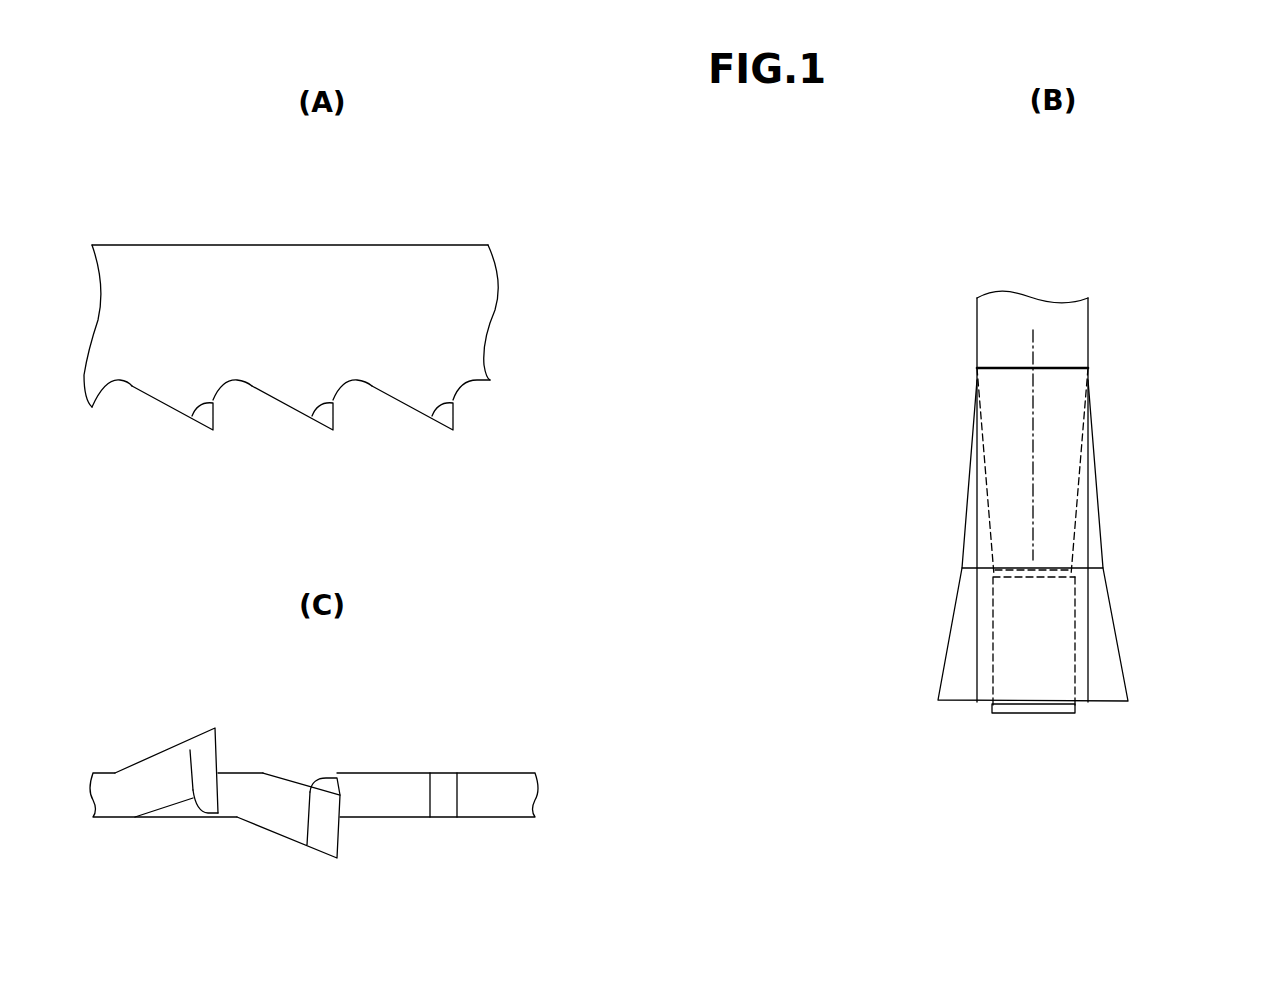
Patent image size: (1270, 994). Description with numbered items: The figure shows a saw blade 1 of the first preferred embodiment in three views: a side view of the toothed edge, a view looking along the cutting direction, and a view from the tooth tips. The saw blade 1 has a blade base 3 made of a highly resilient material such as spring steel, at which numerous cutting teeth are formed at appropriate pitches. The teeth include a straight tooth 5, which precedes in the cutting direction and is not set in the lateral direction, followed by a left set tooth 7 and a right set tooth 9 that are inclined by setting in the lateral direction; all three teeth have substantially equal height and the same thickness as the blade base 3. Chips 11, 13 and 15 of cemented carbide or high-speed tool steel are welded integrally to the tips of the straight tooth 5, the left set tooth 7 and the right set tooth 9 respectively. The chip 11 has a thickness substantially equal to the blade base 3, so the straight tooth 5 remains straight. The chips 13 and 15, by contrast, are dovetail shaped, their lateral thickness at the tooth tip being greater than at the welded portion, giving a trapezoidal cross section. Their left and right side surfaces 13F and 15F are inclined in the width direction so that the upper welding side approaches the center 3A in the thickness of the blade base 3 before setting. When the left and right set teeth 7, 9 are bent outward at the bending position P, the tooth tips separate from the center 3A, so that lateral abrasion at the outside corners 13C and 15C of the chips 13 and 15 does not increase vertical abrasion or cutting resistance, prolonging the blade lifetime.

The saw blade 1 is at (430, 222).
The blade base 3 is at (358, 258).
The center in the thickness of the blade base 3A is at (1033, 350).
The bending position P is at (1007, 367).
The straight tooth 5 is at (407, 388).
The left set tooth 7 is at (167, 388).
The right set tooth 9 is at (288, 388).
The chip on the tooth tip of the straight tooth 11 is at (445, 418).
The chip on the tooth tip of the left set tooth 13 is at (205, 418).
The chip on the tooth tip of the right set tooth 15 is at (327, 418).
The left side surface of chip 13 13F is at (947, 635).
The right side surface of chip 15 15F is at (1122, 635).
The outside corner of chip 13 13C is at (937, 702).
The outside corner of chip 15 15C is at (1132, 702).